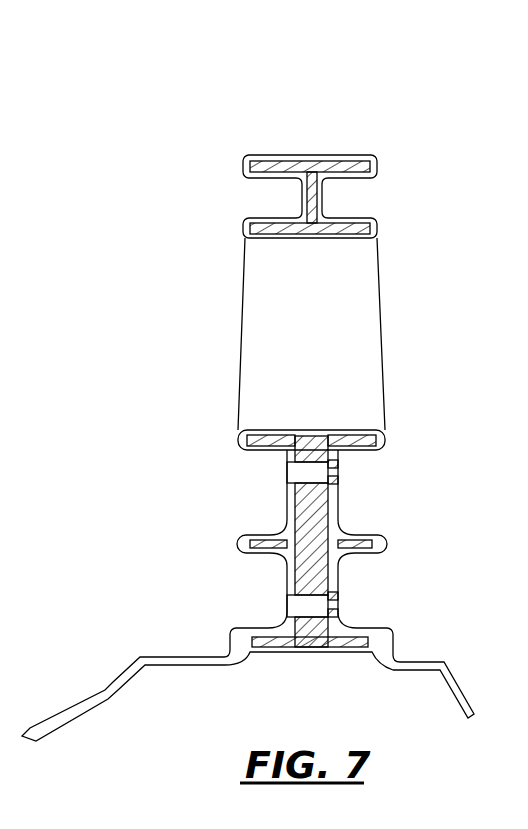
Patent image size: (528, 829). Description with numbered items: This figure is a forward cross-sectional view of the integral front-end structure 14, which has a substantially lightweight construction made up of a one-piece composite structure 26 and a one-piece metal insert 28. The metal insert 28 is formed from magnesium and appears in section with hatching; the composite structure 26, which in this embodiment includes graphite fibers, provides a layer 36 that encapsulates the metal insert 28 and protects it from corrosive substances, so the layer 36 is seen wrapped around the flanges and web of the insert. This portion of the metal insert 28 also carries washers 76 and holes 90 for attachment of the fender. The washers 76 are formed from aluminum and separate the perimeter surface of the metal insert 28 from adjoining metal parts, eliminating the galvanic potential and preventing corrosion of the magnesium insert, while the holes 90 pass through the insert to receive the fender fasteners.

The integral front-end structure 14 is at (168, 226).
The composite structure 26 is at (127, 656).
The metal insert 28 is at (353, 150).
The layer 36 is at (244, 155).
The washers 76 is at (358, 612).
The holes 90 is at (302, 603).